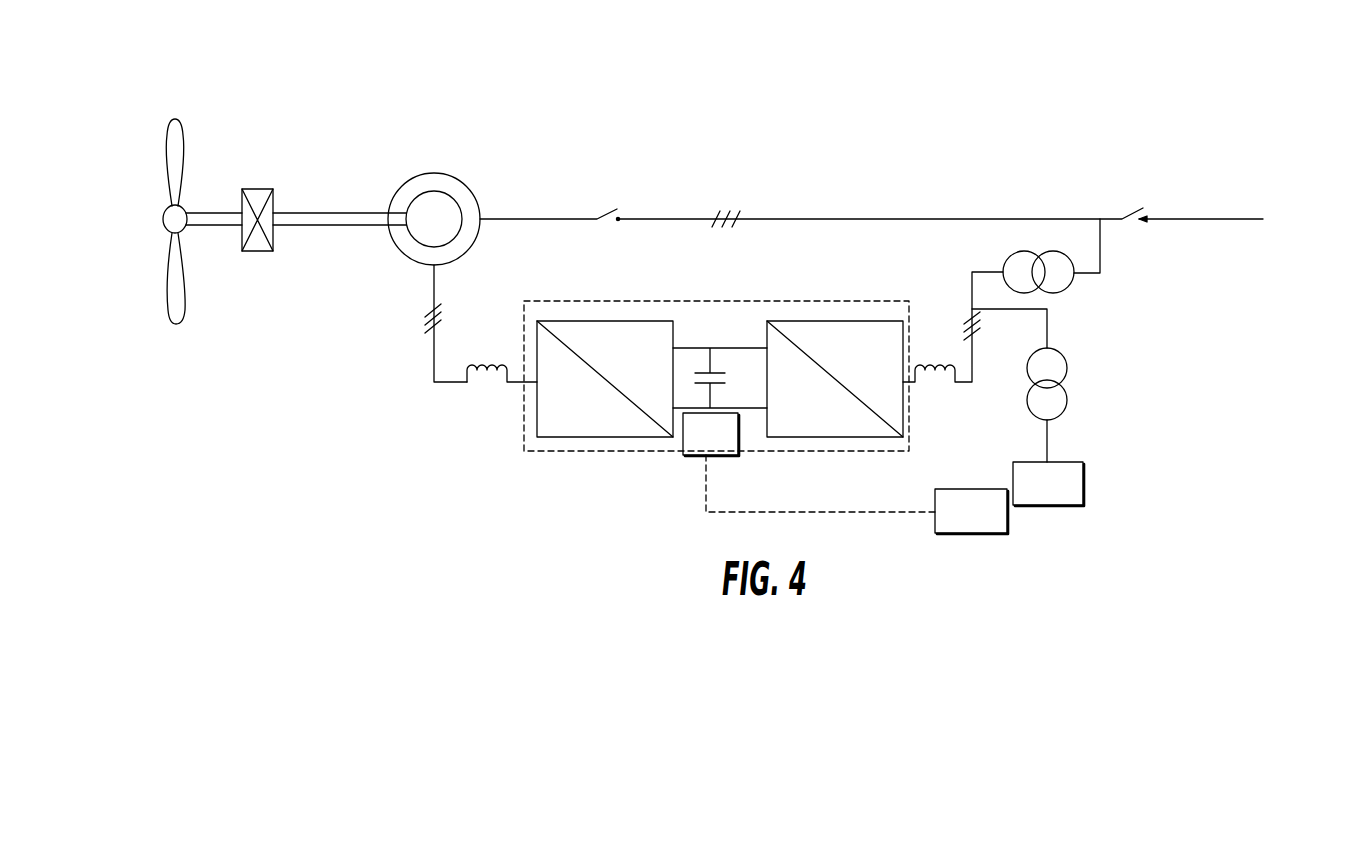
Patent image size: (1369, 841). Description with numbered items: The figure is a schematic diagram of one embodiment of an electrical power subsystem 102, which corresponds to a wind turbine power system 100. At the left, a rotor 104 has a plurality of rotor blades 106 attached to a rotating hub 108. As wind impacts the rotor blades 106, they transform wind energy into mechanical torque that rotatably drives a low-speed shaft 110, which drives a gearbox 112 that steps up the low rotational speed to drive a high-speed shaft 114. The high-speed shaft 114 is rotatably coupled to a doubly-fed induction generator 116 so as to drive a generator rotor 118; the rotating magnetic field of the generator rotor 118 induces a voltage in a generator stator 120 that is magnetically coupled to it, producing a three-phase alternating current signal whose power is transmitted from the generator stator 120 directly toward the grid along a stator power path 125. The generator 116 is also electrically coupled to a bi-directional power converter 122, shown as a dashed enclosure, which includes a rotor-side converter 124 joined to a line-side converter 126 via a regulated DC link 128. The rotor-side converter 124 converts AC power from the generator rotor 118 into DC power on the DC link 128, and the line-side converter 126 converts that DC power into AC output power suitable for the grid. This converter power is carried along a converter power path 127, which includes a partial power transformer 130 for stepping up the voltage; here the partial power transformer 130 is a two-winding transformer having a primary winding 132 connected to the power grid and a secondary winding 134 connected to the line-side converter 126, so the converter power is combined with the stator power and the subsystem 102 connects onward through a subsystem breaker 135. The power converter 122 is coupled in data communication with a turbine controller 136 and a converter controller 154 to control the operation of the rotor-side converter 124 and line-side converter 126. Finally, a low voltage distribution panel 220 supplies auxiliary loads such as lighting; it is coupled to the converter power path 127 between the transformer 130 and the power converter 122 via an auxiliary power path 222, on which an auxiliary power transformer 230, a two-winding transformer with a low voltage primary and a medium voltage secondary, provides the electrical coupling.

The wind turbine power system 100 is at (193, 84).
The electrical power subsystem 102 is at (1038, 104).
The rotor 104 is at (150, 212).
The rotor blades 106 is at (179, 150).
The rotating hub 108 is at (165, 234).
The low-speed shaft 110 is at (203, 226).
The gearbox 112 is at (258, 188).
The high-speed shaft 114 is at (325, 227).
The doubly-fed induction generator 116 is at (459, 170).
The generator rotor 118 is at (410, 243).
The generator stator 120 is at (402, 187).
The bi-directional power converter 122 is at (657, 461).
The rotor-side converter 124 is at (598, 320).
The stator power path 125 is at (777, 218).
The line-side converter 126 is at (828, 320).
The converter power path 127 is at (974, 358).
The regulated DC link 128 is at (720, 336).
The partial power transformer 130 is at (1062, 302).
The primary winding 132 is at (1072, 264).
The secondary winding 134 is at (1010, 255).
The subsystem breaker 135 is at (1150, 211).
The turbine controller 136 is at (985, 526).
The converter controller 154 is at (725, 450).
The low voltage distribution panel 220 is at (1063, 497).
The auxiliary power path 222 is at (1049, 333).
The auxiliary power transformer 230 is at (1078, 388).